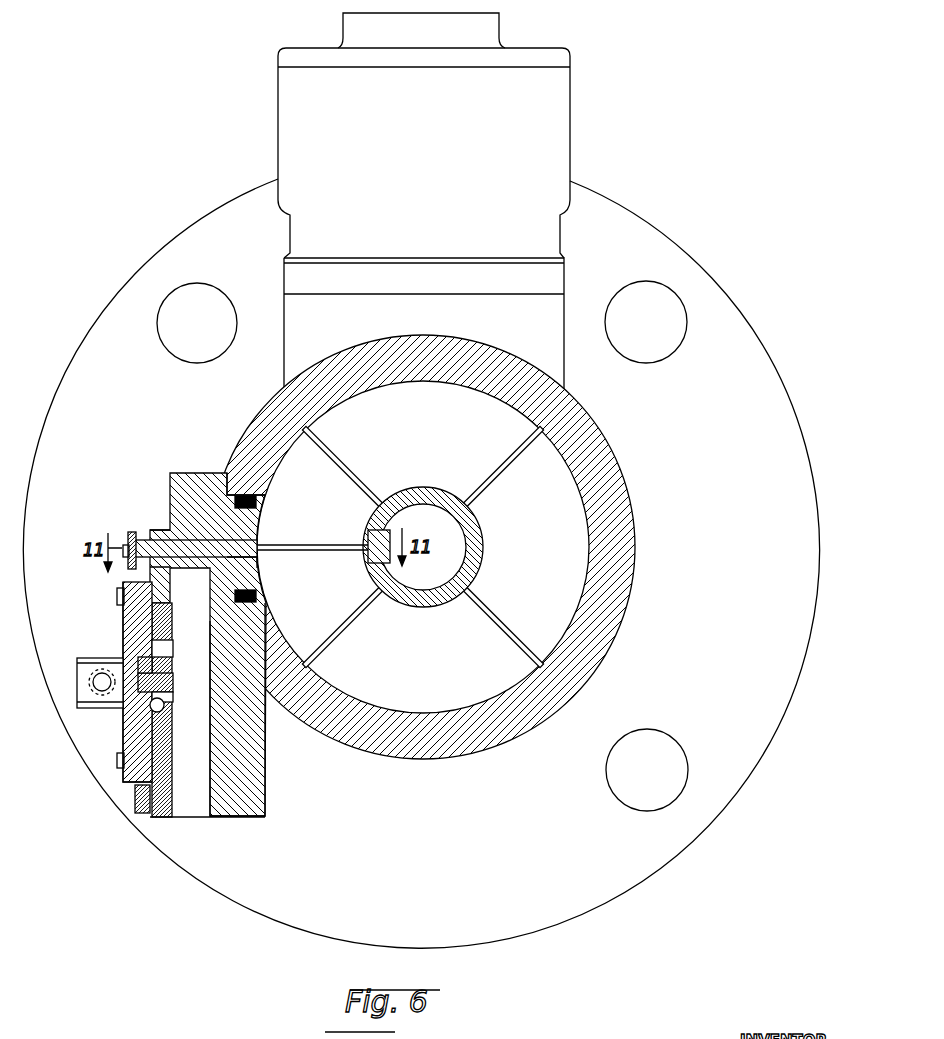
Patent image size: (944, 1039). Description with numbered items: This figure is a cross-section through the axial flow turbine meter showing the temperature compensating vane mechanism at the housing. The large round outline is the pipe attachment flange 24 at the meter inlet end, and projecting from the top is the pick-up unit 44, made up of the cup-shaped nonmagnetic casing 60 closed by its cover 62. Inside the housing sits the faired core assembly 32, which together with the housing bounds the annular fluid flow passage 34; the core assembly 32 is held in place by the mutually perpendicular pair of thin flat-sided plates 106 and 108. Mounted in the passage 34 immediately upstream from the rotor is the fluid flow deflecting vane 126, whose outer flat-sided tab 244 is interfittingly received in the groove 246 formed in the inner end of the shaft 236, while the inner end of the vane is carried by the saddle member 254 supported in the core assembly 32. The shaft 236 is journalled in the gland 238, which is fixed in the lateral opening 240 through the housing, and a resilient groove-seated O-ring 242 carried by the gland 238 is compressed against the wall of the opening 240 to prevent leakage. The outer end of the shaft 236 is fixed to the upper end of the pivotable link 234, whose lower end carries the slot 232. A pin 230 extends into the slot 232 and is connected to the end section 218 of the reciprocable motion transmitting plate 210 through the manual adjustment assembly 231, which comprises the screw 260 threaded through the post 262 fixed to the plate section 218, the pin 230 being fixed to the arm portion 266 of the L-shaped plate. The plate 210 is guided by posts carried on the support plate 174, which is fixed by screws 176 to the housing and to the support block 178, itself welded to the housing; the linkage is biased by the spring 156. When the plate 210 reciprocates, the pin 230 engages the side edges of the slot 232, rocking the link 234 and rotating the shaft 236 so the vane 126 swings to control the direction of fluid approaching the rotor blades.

The pipe attachment flange 24 is at (755, 328).
The pick-up unit 44 is at (457, 201).
The casing 60 is at (565, 92).
The cover 62 is at (538, 47).
The annular fluid flow passage 34 is at (558, 584).
The core assembly 32 is at (425, 607).
The plate 106 is at (342, 461).
The plate 108 is at (494, 478).
The fluid flow deflecting vane 126 is at (341, 541).
The groove 246 is at (258, 542).
The tab 244 is at (256, 557).
The O-ring 242 is at (250, 500).
The lateral opening 240 is at (256, 595).
The saddle member 254 is at (400, 562).
The gland 238 is at (166, 480).
The shaft 236 is at (186, 520).
The pivotable link 234 is at (150, 533).
The spring 156 is at (131, 538).
The plate end section 218 is at (122, 613).
The slot 232 is at (146, 657).
The pin 230 is at (148, 643).
The manual adjustment assembly 231 is at (70, 674).
The post 262 is at (93, 686).
The screw 260 is at (76, 688).
The arm portion 266 is at (158, 705).
The motion transmitting plate 210 is at (118, 775).
The screw 176 is at (137, 807).
The support block 178 is at (265, 800).
The support plate 174 is at (163, 817).